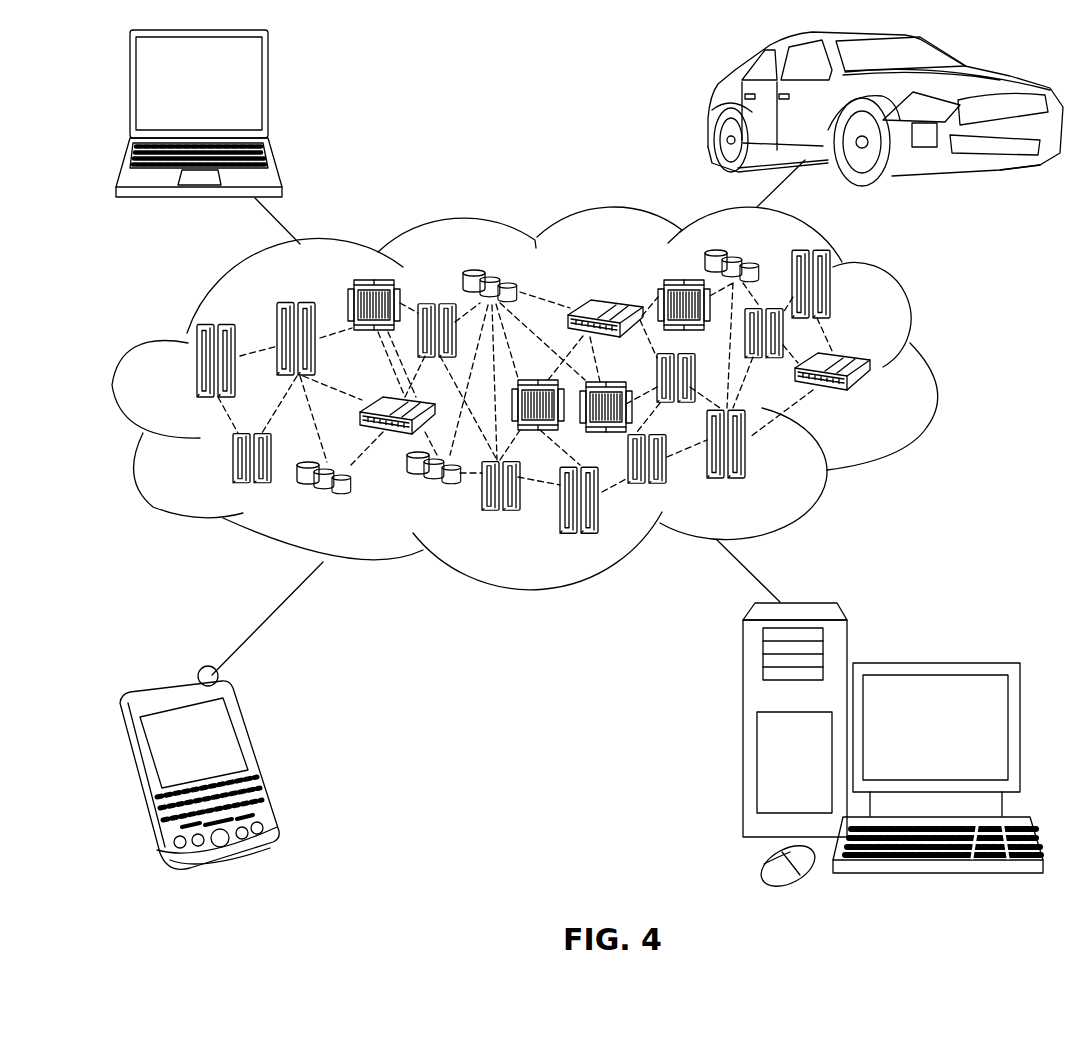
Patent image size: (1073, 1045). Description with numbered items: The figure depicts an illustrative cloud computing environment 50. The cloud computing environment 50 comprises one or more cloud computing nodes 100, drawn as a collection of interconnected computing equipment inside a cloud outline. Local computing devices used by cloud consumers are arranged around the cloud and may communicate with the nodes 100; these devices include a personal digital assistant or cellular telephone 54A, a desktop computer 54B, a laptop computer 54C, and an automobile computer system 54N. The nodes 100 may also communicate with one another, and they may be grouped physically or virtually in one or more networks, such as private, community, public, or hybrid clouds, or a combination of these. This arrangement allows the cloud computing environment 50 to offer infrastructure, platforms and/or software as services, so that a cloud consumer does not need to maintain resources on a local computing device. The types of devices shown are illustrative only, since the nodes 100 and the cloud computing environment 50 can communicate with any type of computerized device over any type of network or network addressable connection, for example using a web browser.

The cloud computing environment 50 is at (932, 370).
The cloud computing nodes 100 is at (877, 401).
The personal digital assistant or cellular telephone 54A is at (258, 758).
The desktop computer 54B is at (932, 663).
The laptop computer 54C is at (278, 92).
The automobile computer system 54N is at (712, 108).